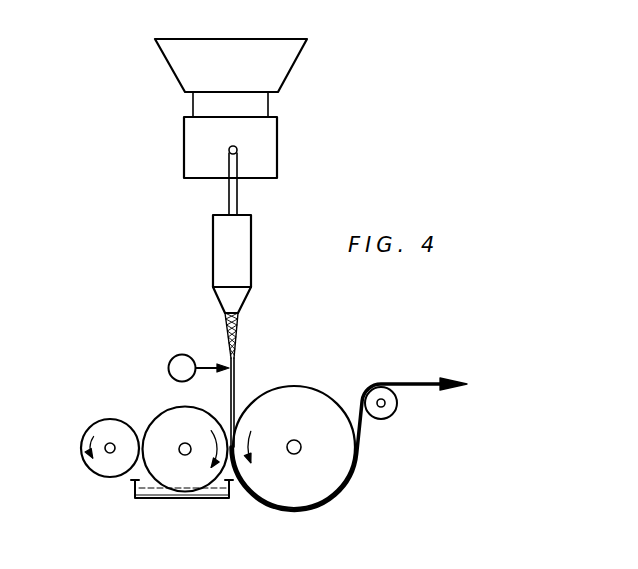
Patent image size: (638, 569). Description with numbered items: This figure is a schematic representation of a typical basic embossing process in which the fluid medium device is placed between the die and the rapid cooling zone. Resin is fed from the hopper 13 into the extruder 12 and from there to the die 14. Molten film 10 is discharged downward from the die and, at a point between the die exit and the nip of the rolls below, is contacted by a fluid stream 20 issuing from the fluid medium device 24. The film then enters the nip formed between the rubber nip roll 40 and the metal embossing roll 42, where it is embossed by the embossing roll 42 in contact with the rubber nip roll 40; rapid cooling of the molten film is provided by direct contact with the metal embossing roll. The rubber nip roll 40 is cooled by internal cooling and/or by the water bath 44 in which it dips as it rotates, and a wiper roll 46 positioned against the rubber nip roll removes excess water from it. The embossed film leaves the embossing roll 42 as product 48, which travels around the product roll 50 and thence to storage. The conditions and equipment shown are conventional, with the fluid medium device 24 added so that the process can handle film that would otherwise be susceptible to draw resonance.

The hopper 13 is at (303, 53).
The extruder 12 is at (277, 155).
The die 14 is at (251, 236).
The fluid stream 20 is at (210, 364).
The molten film 10 is at (235, 383).
The fluid medium device 24 is at (172, 357).
The wiper roll 46 is at (82, 457).
The rubber nip roll 40 is at (155, 462).
The water bath 44 is at (219, 492).
The embossing roll 42 is at (332, 463).
The product 48 is at (393, 383).
The product roll 50 is at (385, 412).